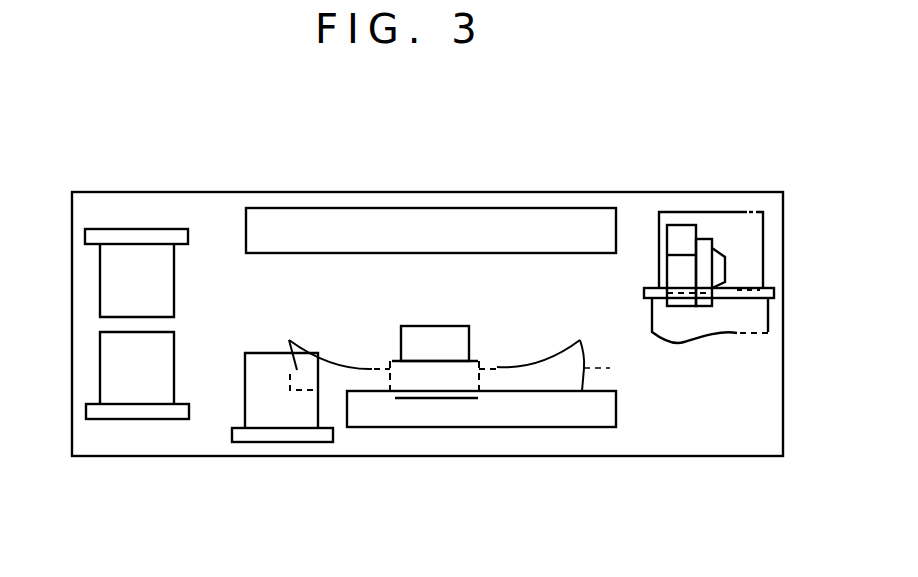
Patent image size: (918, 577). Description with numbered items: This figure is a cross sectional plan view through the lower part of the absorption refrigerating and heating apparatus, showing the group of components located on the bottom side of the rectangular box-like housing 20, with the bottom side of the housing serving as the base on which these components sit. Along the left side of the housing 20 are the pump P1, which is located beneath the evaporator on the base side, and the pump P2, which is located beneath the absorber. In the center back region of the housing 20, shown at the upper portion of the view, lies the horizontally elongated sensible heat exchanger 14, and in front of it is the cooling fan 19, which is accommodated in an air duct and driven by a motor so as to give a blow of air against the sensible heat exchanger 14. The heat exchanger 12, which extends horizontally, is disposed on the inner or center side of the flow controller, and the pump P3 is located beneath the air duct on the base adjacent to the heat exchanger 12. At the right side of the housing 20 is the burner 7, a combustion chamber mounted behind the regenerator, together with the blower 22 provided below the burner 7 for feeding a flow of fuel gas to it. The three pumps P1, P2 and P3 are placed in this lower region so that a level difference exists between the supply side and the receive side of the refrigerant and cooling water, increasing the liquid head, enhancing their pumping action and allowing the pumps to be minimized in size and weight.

The housing 20 is at (70, 275).
The pump P2 is at (142, 237).
The pump P1 is at (121, 387).
The pump P3 is at (256, 414).
The sensible heat exchanger 14 is at (530, 217).
The heat exchanger 12 is at (557, 418).
The cooling fan 19 is at (610, 368).
The burner 7 is at (763, 236).
The blower 22 is at (700, 248).